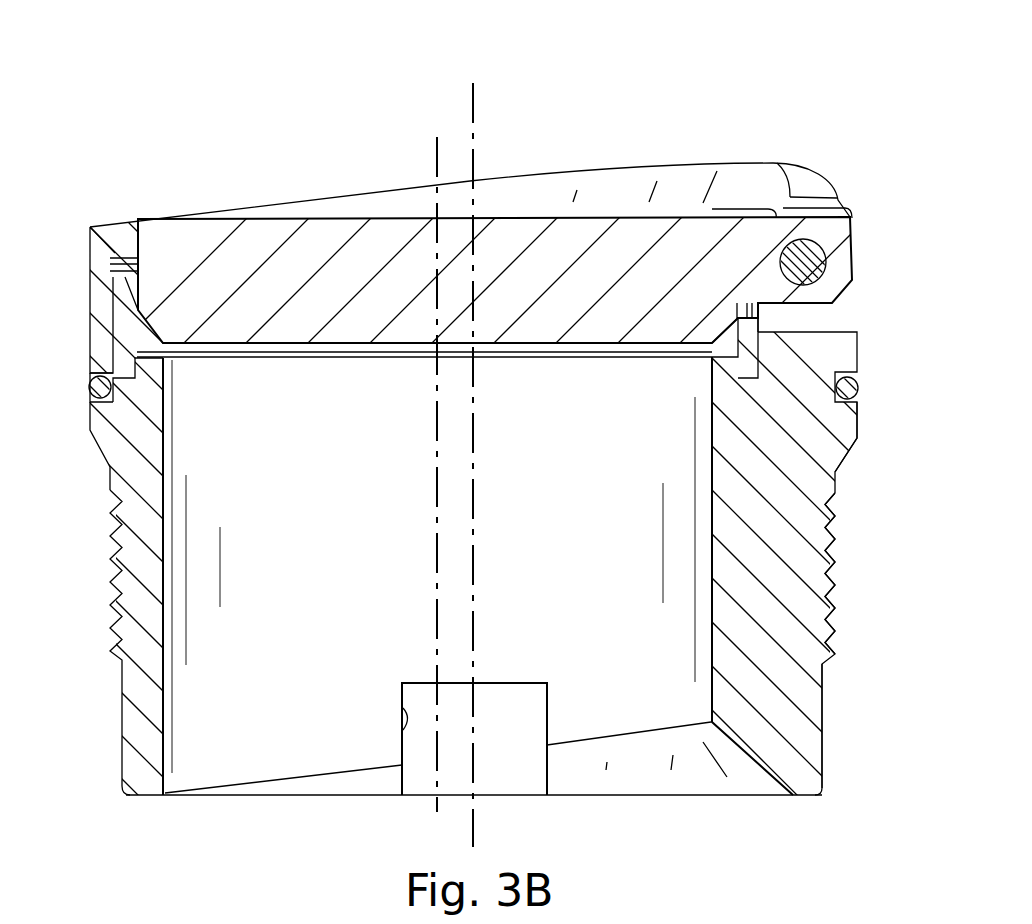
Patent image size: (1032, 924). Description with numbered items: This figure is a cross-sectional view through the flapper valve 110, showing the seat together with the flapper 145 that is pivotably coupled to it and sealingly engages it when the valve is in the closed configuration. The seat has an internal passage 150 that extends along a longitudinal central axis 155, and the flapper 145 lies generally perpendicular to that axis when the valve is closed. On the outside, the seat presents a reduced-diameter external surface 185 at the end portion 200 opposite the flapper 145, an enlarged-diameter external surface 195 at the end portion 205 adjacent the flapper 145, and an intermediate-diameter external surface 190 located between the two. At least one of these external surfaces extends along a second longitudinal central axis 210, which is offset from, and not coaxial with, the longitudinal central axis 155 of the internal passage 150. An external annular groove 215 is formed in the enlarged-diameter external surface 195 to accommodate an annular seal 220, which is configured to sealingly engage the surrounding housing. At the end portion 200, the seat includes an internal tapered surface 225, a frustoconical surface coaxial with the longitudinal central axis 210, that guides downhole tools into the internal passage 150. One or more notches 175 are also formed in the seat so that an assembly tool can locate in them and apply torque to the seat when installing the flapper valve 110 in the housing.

The flapper valve 110 is at (141, 97).
The flapper 145 is at (264, 237).
The internal passage 150 is at (320, 628).
The longitudinal central axis 155 is at (436, 513).
The notch 175 is at (401, 716).
The reduced-diameter external surface 185 is at (824, 710).
The intermediate-diameter external surface 190 is at (836, 590).
The enlarged-diameter external surface 195 is at (858, 424).
The end portion 200 is at (689, 795).
The end portion 205 is at (393, 189).
The longitudinal central axis 210 is at (474, 541).
The external annular groove 215 is at (92, 381).
The annular seal 220 is at (860, 391).
The internal tapered surface 225 is at (622, 782).